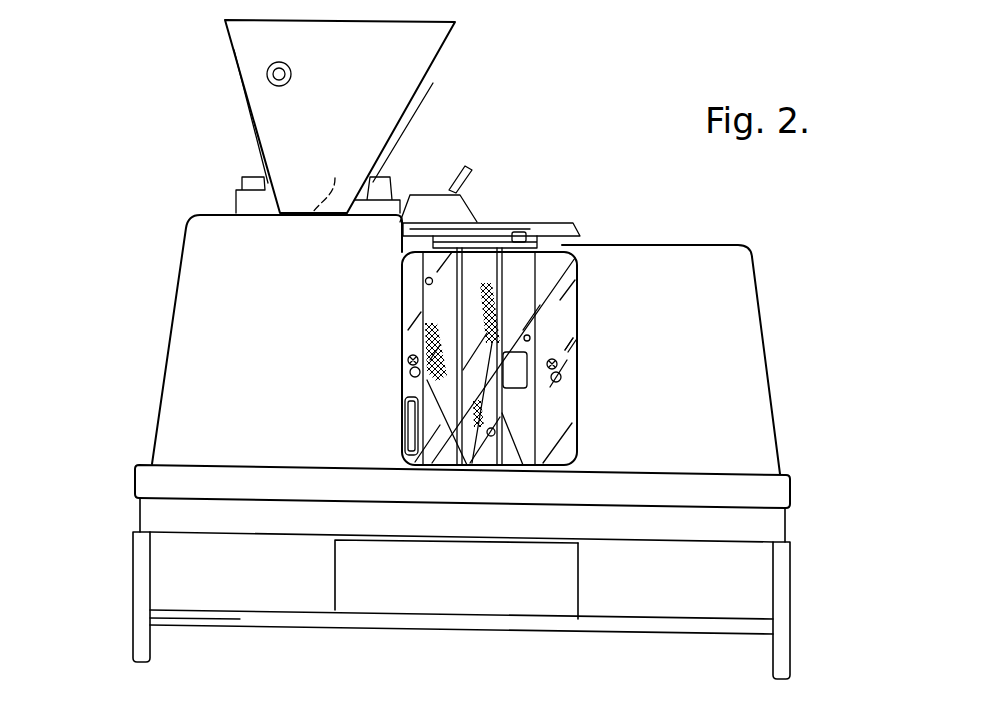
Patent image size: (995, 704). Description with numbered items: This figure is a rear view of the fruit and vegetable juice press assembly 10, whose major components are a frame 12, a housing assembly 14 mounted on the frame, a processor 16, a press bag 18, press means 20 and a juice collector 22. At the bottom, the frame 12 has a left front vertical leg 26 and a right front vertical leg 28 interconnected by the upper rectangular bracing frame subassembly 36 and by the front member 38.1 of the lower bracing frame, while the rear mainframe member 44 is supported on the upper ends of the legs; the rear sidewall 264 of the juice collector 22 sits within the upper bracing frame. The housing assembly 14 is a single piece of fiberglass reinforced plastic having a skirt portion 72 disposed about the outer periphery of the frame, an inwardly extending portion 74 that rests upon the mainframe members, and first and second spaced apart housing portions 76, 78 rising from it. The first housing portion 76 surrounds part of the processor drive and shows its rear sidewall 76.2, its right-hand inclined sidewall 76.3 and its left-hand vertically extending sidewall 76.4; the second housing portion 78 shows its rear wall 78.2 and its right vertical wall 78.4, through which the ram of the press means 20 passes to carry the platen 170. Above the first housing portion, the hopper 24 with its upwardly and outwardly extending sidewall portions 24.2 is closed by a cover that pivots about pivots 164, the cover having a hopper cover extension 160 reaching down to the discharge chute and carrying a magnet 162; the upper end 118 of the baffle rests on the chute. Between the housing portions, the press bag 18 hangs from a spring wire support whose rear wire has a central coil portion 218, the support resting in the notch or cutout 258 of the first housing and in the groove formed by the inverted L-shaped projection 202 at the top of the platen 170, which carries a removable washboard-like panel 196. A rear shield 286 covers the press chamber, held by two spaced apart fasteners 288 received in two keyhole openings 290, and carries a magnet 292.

The fruit and vegetable juice press assembly 10 is at (570, 135).
The frame 12 is at (116, 601).
The housing assembly 14 is at (786, 356).
The processor 16 is at (190, 130).
The press bag 18 is at (402, 385).
The press means 20 is at (547, 246).
The juice collector 22 is at (320, 568).
The hopper 24 is at (418, 127).
The upwardly and outwardly extending sidewall portions 24.2 is at (249, 112).
The left front vertical leg 26 is at (785, 655).
The right front vertical leg 28 is at (137, 637).
The upper rectangular bracing frame subassembly 36 is at (640, 645).
The front member of lower bracing frame assembly 38.1 is at (240, 620).
The rear mainframe member 44 is at (435, 527).
The skirt portion 72 is at (775, 498).
The inwardly extending portion 74 is at (786, 471).
The first housing portion 76 is at (180, 238).
The rear sidewall of first housing portion 76.2 is at (196, 281).
The right-hand inclined sidewall 76.3 is at (165, 355).
The left-hand vertically extending sidewall 76.4 is at (420, 283).
The second housing portion 78 is at (762, 269).
The rear wall of second housing portion 78.2 is at (728, 303).
The right vertical wall of second housing portion 78.4 is at (546, 333).
The upper end of baffle 118 is at (470, 170).
The hopper cover extension 160 is at (265, 132).
The magnet 162 is at (333, 174).
The pivots 164 is at (291, 72).
The platen 170 is at (572, 282).
The removable panel 196 is at (497, 433).
The projection 202 is at (518, 230).
The central coil portion 218 is at (425, 280).
The notch or cutout 258 is at (405, 243).
The rear sidewall of juice collector 264 is at (567, 574).
The rear shield 286 is at (566, 316).
The fasteners 288 is at (428, 336).
The keyhole openings 290 is at (409, 366).
The magnet 292 is at (404, 427).